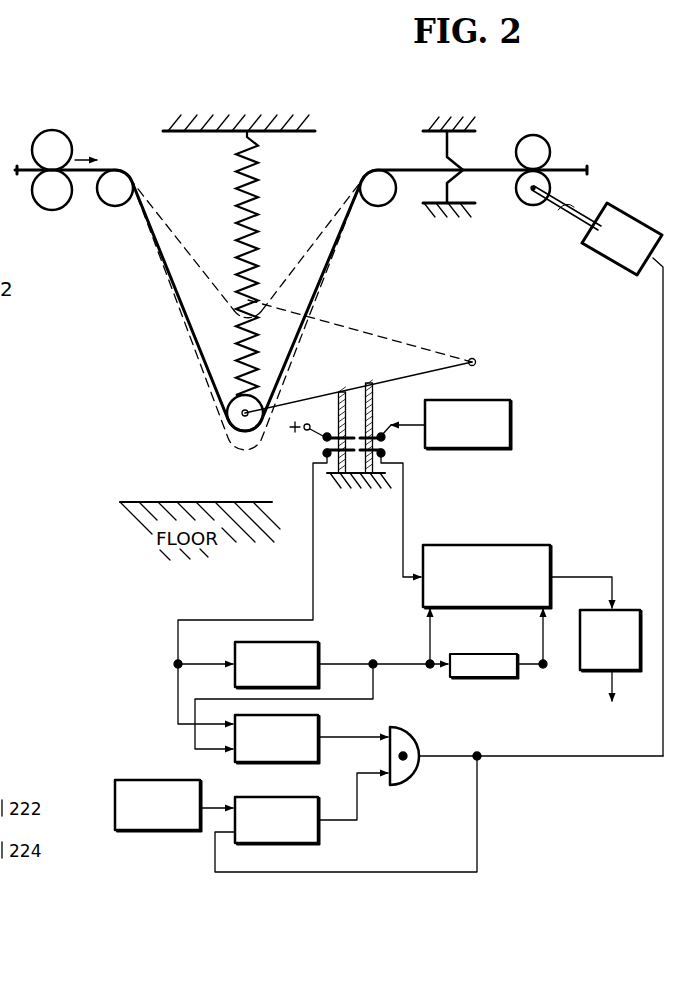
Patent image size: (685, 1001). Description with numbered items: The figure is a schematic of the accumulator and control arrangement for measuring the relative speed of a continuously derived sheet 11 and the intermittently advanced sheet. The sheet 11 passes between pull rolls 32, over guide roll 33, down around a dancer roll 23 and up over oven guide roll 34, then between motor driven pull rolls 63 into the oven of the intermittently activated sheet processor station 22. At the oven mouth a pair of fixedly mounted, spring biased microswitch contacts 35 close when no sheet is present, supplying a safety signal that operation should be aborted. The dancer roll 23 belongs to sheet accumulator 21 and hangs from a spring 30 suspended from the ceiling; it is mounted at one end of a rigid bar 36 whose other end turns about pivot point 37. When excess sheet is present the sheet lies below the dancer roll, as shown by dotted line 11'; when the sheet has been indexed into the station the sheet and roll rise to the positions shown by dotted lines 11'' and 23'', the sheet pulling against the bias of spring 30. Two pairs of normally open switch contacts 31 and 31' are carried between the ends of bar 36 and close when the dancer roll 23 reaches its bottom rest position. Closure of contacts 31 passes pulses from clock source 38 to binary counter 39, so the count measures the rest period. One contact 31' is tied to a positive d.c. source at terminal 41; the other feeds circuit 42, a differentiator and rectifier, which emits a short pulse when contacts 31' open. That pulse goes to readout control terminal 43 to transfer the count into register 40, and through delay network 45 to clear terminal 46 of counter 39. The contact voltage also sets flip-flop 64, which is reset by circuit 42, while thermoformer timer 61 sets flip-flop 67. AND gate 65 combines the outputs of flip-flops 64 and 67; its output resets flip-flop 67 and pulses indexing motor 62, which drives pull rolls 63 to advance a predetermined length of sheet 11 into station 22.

The sheet 11 is at (301, 276).
The sheet position with excess (dotted line) 11' is at (246, 316).
The sheet position after indexing (dotted line) 11'' is at (247, 244).
The sheet accumulator 21 is at (199, 113).
The intermittently activated sheet processor station 22 is at (521, 114).
The dancer roll 23 is at (217, 421).
The dancer roll raised position (dotted line) 23'' is at (267, 276).
The spring 30 is at (237, 169).
The switch contacts 31 is at (387, 478).
The switch contacts 31' is at (266, 578).
The pull rolls 32 is at (65, 137).
The guide roll 33 is at (117, 205).
The oven guide roll 34 is at (378, 202).
The microswitch contacts 35 is at (466, 178).
The rigid bar 36 is at (312, 399).
The pivot point 37 is at (477, 360).
The clock source 38 is at (513, 414).
The binary counter 39 is at (551, 544).
The register 40 is at (596, 671).
The terminal 41 is at (310, 424).
The differentiator and rectifier circuit 42 is at (320, 654).
The readout control terminal 43 is at (432, 608).
The delay network 45 is at (510, 678).
The clear terminal 46 is at (540, 608).
The thermoformer timer 61 is at (160, 780).
The indexing motor 62 is at (622, 215).
The motor driven pull rolls 63 is at (530, 205).
The flip-flop 64 is at (320, 721).
The AND gate 65 is at (412, 735).
The flip-flop 67 is at (300, 797).